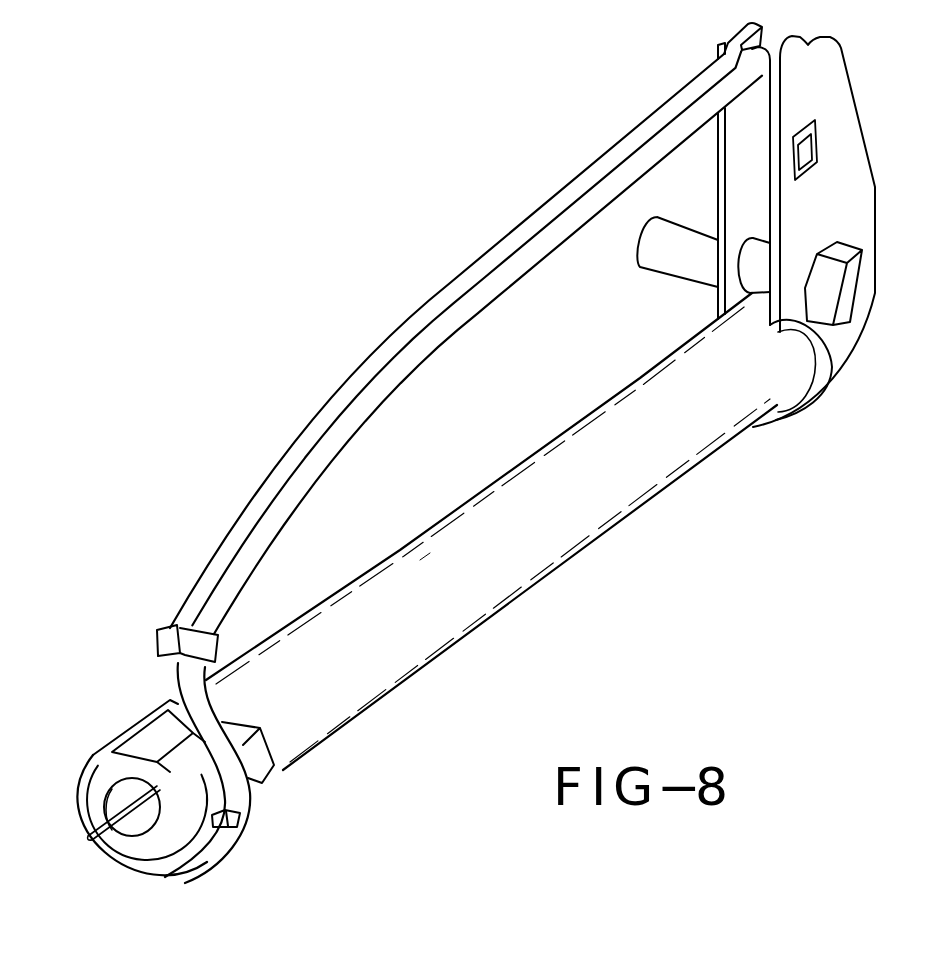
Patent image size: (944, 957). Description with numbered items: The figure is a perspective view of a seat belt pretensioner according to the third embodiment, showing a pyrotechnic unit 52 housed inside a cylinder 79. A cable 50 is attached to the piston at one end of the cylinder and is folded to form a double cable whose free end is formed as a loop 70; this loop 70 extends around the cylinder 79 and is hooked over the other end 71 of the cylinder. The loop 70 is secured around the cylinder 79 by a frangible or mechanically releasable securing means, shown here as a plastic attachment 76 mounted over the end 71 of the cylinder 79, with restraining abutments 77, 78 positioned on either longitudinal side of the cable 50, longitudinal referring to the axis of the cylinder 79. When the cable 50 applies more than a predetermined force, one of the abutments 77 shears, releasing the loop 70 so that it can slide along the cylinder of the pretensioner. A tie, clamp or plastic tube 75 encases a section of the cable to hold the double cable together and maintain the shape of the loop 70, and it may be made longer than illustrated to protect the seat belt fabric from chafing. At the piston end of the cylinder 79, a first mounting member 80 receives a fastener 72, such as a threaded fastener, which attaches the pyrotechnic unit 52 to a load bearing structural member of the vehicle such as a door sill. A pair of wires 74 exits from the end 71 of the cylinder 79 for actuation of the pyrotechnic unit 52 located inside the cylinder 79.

The cable 50 is at (560, 204).
The pyrotechnic unit 52 is at (660, 501).
The loop 70 is at (137, 703).
The end of the cylinder 71 is at (145, 745).
The fastener 72 is at (848, 297).
The pair of wires 74 is at (110, 833).
The plastic tube 75 is at (175, 637).
The plastic attachment 76 is at (198, 803).
The restraining abutment 77 is at (264, 777).
The restraining abutment 78 is at (232, 835).
The cylinder 79 is at (503, 577).
The first mounting member 80 is at (843, 178).